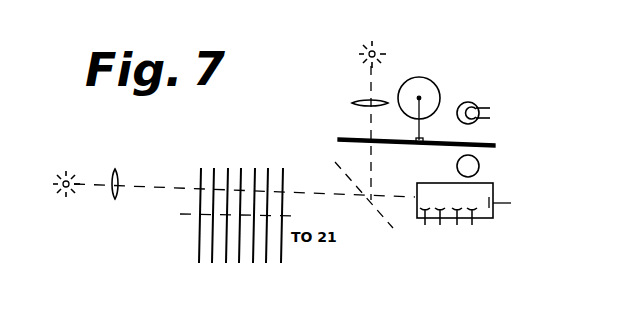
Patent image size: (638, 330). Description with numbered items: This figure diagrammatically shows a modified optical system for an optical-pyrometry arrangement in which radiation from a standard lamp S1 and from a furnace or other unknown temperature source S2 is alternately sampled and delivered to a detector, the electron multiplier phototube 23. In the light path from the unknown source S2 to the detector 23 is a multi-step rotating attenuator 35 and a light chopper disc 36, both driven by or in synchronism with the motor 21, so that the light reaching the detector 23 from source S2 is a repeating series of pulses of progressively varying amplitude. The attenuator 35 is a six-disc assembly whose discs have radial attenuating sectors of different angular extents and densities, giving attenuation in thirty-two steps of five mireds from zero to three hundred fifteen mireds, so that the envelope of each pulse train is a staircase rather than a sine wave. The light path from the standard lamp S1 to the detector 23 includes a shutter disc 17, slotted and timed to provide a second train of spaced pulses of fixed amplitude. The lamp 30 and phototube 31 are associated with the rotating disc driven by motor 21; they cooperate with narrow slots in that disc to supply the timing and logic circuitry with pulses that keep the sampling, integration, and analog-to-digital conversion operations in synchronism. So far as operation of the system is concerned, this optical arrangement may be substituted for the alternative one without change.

The standard lamp S1 is at (377, 49).
The unknown temperature source S2 is at (64, 178).
The shutter disc 17 is at (342, 137).
The motor 21 is at (430, 78).
The electron multiplier phototube 23 is at (478, 182).
The lamp 30 is at (486, 103).
The phototube 31 is at (457, 166).
The multi-step rotating attenuator 35 is at (260, 269).
The light chopper disc 36 is at (281, 252).